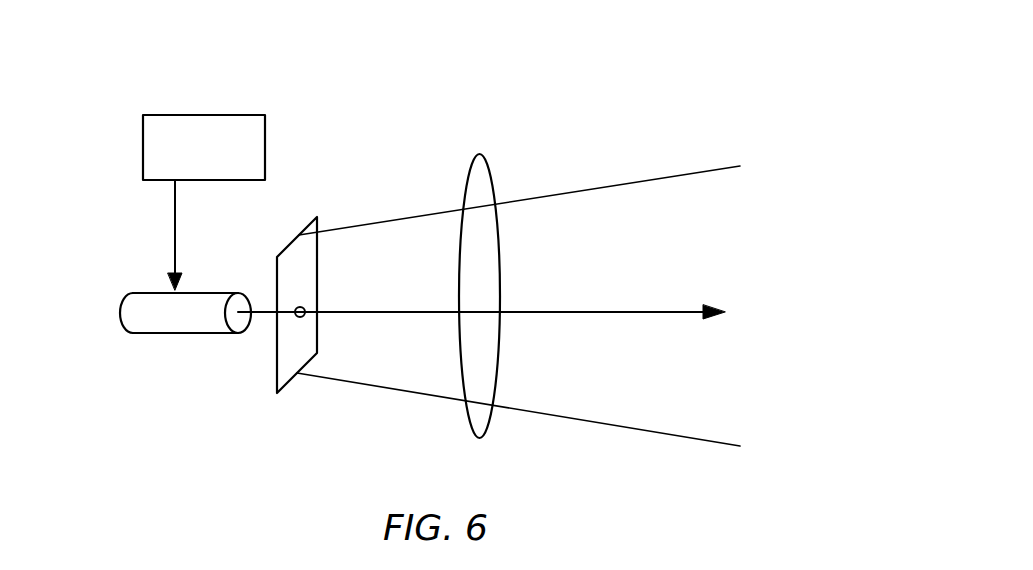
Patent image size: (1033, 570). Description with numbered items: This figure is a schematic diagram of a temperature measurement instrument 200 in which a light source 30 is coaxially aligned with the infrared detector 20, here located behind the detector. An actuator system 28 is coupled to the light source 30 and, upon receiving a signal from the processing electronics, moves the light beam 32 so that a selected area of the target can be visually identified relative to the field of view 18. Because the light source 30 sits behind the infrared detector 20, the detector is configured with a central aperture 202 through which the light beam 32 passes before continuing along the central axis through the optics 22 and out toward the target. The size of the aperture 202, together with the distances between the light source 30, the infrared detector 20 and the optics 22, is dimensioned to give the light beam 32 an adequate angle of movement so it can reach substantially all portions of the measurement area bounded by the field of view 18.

The temperature measurement instrument 200 is at (375, 117).
The actuator system 28 is at (209, 115).
The light source 30 is at (133, 330).
The infrared detector 20 is at (291, 240).
The central aperture 202 is at (296, 316).
The light beam 32 is at (615, 312).
The field of view 18 is at (635, 183).
The optics 22 is at (480, 163).